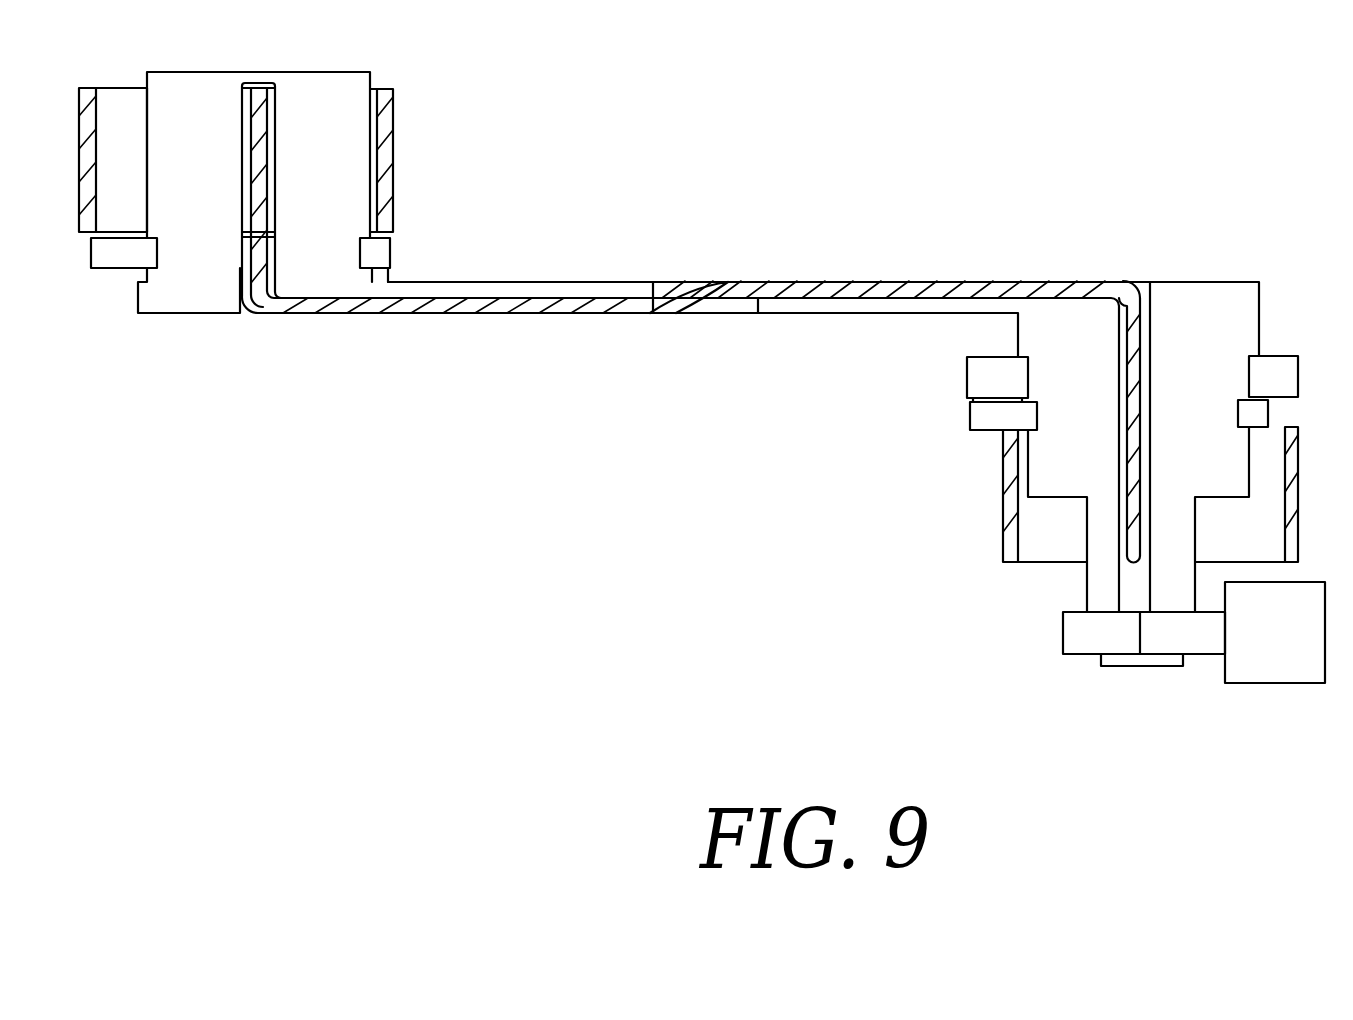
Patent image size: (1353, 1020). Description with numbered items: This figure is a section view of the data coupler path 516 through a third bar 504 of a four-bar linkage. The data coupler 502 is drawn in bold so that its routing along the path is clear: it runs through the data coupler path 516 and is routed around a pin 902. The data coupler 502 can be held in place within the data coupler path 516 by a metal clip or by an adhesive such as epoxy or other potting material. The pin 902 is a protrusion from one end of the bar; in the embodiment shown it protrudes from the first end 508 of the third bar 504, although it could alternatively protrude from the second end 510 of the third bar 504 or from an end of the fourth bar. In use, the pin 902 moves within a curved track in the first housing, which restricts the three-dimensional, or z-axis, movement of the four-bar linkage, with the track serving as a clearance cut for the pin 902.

The pin 902 is at (343, 72).
The first end of the third bar 508 is at (253, 193).
The data coupler path 516 is at (487, 281).
The data coupler 502 is at (863, 281).
The third bar 504 is at (696, 371).
The second end of the third bar 510 is at (1131, 669).